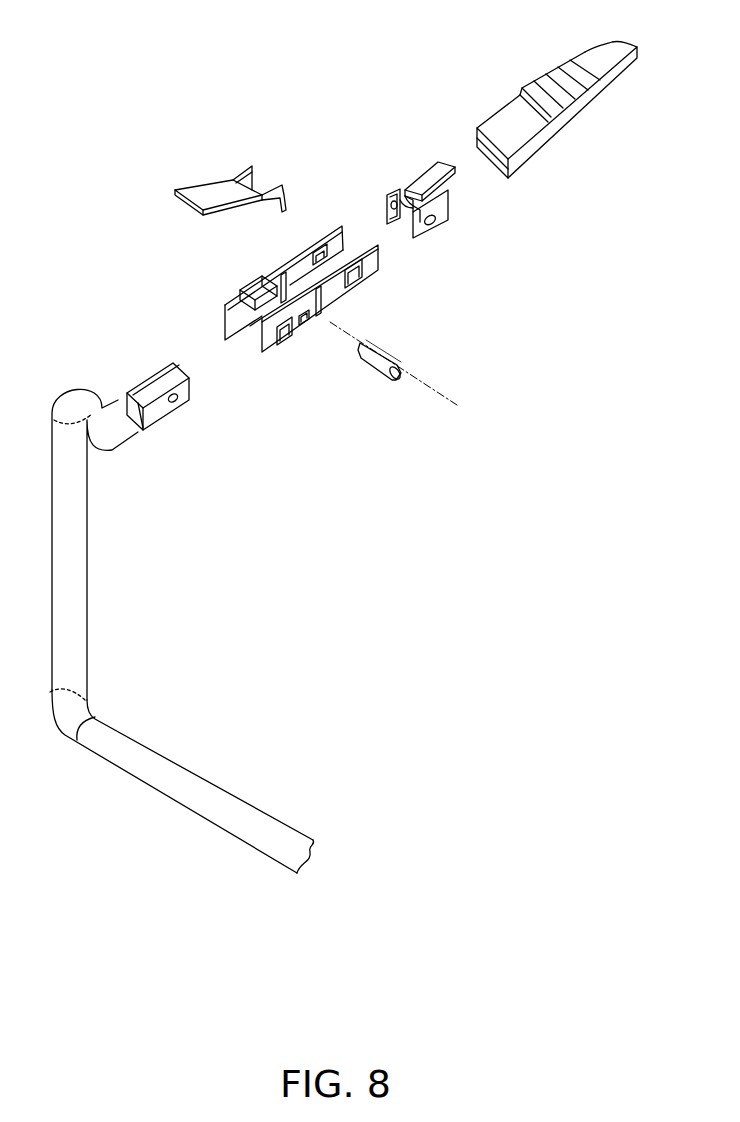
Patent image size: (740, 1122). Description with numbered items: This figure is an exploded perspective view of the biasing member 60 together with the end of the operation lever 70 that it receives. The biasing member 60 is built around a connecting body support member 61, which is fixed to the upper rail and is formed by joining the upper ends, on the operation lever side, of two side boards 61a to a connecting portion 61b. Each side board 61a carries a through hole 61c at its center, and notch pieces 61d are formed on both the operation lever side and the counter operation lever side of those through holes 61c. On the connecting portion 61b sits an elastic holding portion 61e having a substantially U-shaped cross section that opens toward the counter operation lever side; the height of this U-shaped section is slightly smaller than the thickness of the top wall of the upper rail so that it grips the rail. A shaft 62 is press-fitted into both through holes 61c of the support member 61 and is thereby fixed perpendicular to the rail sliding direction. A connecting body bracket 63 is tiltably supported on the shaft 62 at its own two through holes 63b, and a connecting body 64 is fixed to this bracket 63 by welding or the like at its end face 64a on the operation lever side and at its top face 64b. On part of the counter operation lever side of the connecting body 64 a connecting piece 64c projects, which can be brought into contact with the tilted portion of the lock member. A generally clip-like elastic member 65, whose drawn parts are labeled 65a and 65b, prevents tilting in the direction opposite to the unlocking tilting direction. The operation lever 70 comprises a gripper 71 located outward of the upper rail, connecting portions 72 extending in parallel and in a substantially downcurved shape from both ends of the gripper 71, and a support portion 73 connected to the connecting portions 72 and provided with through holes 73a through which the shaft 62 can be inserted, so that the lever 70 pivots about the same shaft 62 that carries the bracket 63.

The biasing member 60 is at (331, 112).
The connecting body support member 61 is at (192, 298).
The side boards 61a is at (225, 326).
The connecting portion 61b is at (248, 345).
The through holes 61c is at (272, 283).
The notch pieces 61d is at (318, 250).
The elastic holding portion 61e is at (250, 287).
The shaft 62 is at (380, 376).
The connecting body bracket 63 is at (447, 247).
The through holes 63b is at (398, 190).
The connecting body 64 is at (568, 172).
The end face 64a is at (496, 170).
The top face 64b is at (492, 118).
The connecting piece 64c is at (627, 72).
The elastic member 65 is at (170, 182).
The spring plate body 65a is at (205, 186).
The spring plate tab 65b is at (272, 186).
The operation lever 70 is at (212, 563).
The gripper 71 is at (244, 795).
The connecting portions 72 is at (92, 640).
The support portion 73 is at (158, 428).
The through holes 73a is at (175, 405).